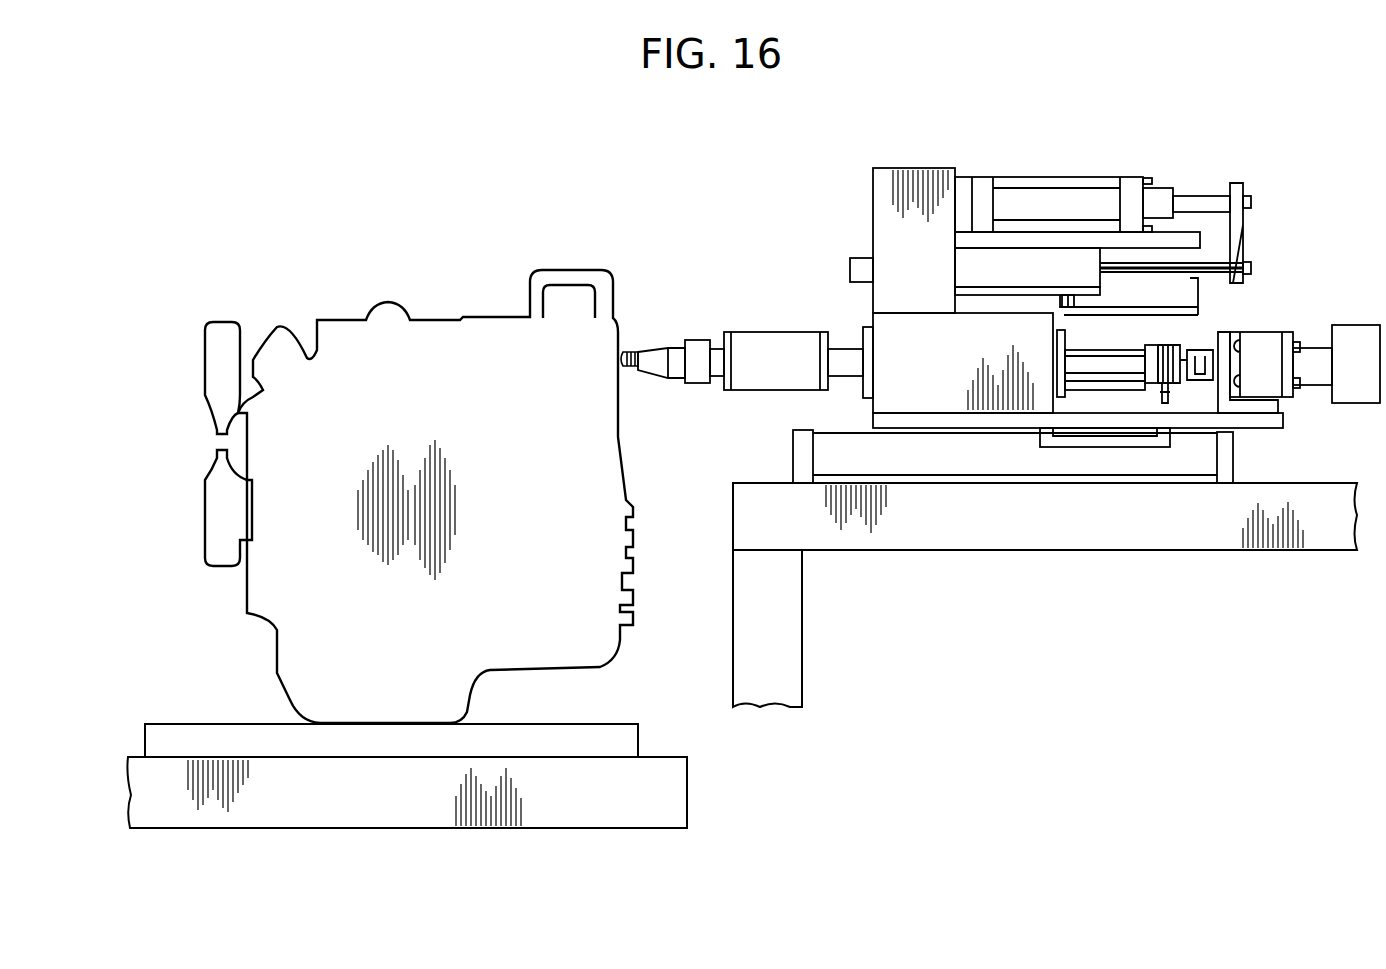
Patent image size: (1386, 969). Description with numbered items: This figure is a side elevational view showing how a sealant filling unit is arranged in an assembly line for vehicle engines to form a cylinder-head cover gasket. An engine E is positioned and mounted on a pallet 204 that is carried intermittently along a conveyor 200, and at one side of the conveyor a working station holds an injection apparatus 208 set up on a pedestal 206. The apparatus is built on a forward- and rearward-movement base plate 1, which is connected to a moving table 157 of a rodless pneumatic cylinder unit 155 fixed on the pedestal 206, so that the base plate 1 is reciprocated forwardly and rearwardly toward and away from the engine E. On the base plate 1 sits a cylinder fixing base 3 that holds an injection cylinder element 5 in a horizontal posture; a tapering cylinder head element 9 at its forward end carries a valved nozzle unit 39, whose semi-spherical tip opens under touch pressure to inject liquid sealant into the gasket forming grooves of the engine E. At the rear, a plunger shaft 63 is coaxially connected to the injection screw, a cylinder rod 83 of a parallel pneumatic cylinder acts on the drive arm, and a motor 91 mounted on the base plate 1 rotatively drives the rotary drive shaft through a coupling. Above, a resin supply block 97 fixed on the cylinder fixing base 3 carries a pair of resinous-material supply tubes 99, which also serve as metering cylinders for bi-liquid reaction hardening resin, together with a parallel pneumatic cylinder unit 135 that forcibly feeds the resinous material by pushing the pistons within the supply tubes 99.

The engine E is at (460, 315).
The pallet 204 is at (612, 736).
The conveyor 200 is at (680, 790).
The nozzle unit 39 is at (633, 370).
The cylinder head element 9 is at (655, 362).
The injection cylinder element 5 is at (848, 372).
The cylinder fixing base 3 is at (928, 395).
The forward- and rearward-movement base plate 1 is at (1008, 430).
The resin supply block 97 is at (882, 190).
The injection apparatus 208 is at (1027, 150).
The pneumatic cylinder unit for forcibly feeding the resinous material 135 is at (1073, 205).
The resinous-material supply tubes 99 is at (1095, 258).
The plunger shaft 63 is at (1095, 372).
The motor 91 is at (1255, 340).
The cylinder rod 83 is at (1080, 430).
The moving table 157 is at (1122, 442).
The rodless pneumatic cylinder unit 155 is at (1180, 460).
The pedestal 206 is at (972, 540).